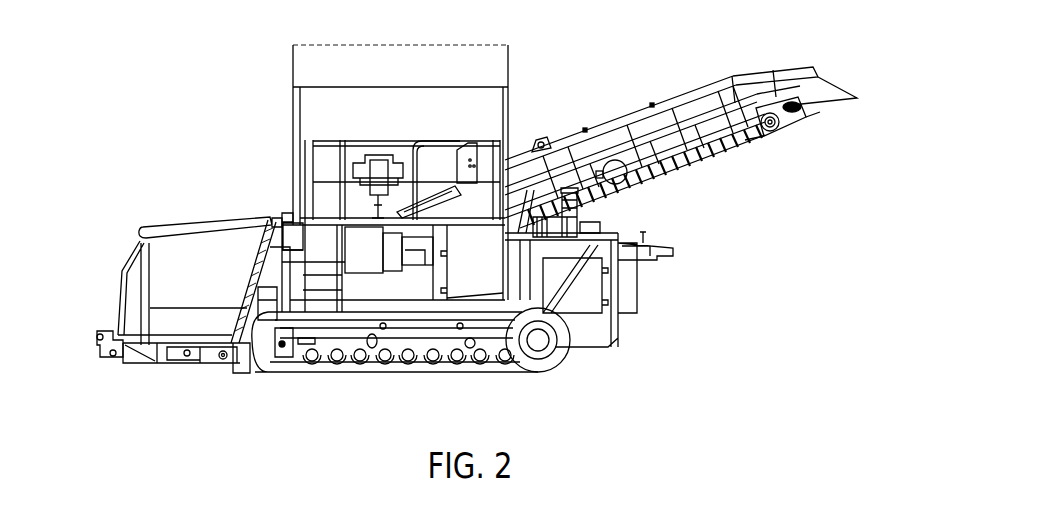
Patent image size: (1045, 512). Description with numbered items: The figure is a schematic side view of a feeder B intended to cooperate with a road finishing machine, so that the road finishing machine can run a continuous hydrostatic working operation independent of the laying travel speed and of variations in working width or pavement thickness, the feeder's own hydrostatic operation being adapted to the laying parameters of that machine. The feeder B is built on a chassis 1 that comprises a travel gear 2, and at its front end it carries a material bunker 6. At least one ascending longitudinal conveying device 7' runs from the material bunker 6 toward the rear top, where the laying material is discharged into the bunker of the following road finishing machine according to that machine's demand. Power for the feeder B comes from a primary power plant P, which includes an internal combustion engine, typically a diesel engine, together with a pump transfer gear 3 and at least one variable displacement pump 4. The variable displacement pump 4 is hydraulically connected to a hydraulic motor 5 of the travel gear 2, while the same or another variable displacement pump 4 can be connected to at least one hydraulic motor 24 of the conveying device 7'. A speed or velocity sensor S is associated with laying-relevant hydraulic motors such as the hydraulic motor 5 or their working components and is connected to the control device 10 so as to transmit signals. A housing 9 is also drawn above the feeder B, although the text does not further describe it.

The chassis 1 is at (202, 332).
The travel gear 2 is at (545, 367).
The pump transfer gear 3 is at (393, 265).
The variable displacement pump 4 is at (417, 264).
The hydraulic motor 5 is at (552, 344).
The material bunker 6 is at (183, 248).
The conveying device 7' is at (681, 147).
The housing 9 is at (506, 104).
The control device 10 is at (466, 158).
The hydraulic motor 24 is at (623, 181).
The feeder B is at (522, 75).
The primary power plant P is at (357, 210).
The speed or velocity sensor S is at (601, 184).